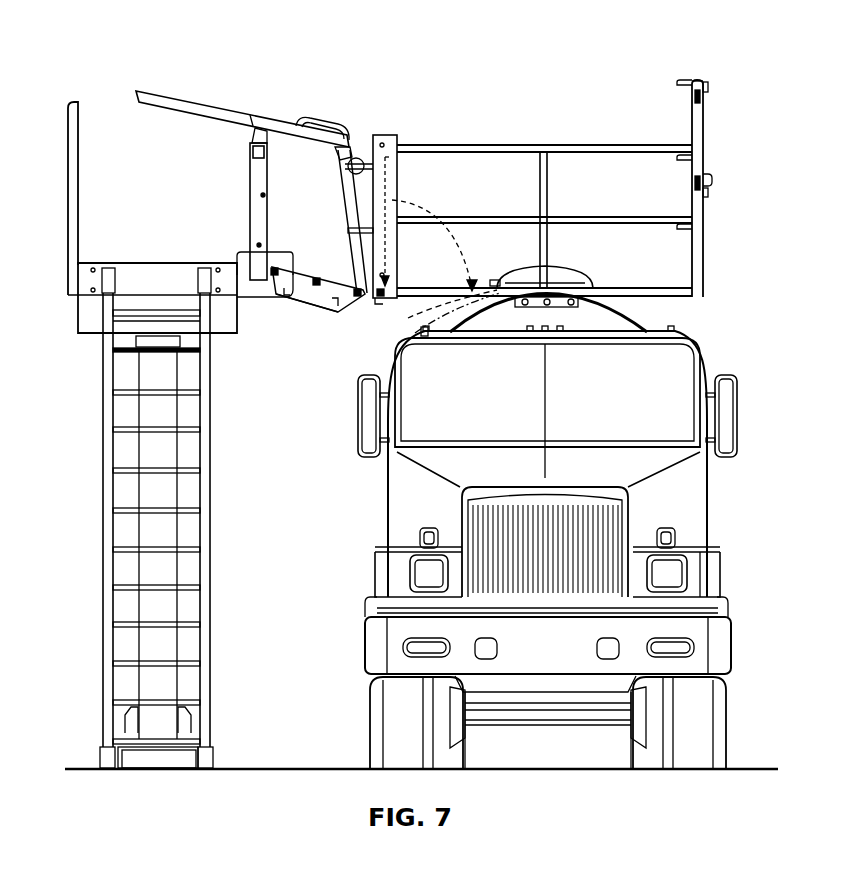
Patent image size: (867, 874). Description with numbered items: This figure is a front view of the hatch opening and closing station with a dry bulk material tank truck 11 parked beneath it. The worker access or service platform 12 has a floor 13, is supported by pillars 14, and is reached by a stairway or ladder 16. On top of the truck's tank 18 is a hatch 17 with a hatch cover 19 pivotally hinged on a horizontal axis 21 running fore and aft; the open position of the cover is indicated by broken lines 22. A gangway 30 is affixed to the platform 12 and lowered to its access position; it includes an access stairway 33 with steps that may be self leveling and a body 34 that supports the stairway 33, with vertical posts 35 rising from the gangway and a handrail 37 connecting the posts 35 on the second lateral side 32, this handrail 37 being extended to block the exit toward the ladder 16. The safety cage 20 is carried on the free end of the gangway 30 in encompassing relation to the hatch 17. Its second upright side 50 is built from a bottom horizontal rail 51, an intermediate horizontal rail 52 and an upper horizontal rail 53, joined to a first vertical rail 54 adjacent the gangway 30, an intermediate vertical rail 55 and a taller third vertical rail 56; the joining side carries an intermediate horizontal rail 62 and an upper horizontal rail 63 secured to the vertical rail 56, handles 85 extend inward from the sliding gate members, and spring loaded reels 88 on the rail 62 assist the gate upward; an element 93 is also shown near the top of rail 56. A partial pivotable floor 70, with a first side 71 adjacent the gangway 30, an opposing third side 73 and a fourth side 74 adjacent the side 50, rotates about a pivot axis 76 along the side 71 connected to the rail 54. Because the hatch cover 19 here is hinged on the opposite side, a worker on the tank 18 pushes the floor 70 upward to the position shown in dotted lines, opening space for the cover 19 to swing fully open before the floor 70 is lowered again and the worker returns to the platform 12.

The dry bulk material tank truck 11 is at (710, 497).
The service platform 12 is at (68, 213).
The floor 13 is at (157, 262).
The pillars 14 is at (170, 367).
The ladder 16 is at (208, 448).
The hatch 17 is at (588, 285).
The tank 18 is at (628, 323).
The hatch cover 19 is at (560, 273).
The safety cage 20 is at (615, 116).
The horizontal axis 21 is at (496, 280).
The broken lines 22 is at (446, 314).
The gangway 30 is at (212, 92).
The second lateral side 32 is at (321, 300).
The access stairway 33 is at (278, 253).
The body 34 is at (312, 298).
The vertical posts 35 is at (263, 213).
The handrail 37 is at (177, 97).
The second upright side 50 is at (458, 146).
The bottom horizontal rail 51 is at (635, 288).
The intermediate horizontal rail 52 is at (595, 217).
The upper horizontal rail 53 is at (605, 150).
The first vertical rail 54 is at (390, 143).
The intermediate vertical rail 55 is at (541, 175).
The third vertical rail 56 is at (698, 131).
The intermediate horizontal rail 62 is at (709, 191).
The upper horizontal rail 63 is at (708, 85).
The partial pivotable floor 70 is at (395, 199).
The first side 71 is at (388, 276).
The third side 73 is at (394, 168).
The fourth side 74 is at (386, 247).
The pivot axis 76 is at (382, 302).
The handle 85 is at (689, 86).
The spring loaded reels 88 is at (711, 180).
The cap 93 is at (694, 78).